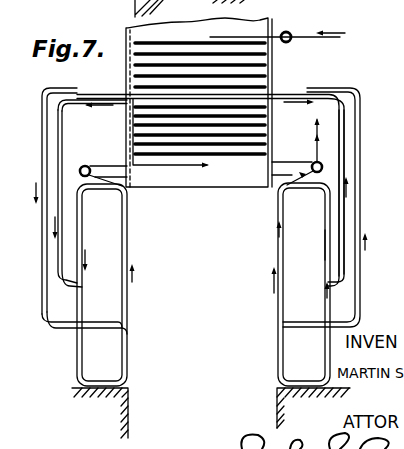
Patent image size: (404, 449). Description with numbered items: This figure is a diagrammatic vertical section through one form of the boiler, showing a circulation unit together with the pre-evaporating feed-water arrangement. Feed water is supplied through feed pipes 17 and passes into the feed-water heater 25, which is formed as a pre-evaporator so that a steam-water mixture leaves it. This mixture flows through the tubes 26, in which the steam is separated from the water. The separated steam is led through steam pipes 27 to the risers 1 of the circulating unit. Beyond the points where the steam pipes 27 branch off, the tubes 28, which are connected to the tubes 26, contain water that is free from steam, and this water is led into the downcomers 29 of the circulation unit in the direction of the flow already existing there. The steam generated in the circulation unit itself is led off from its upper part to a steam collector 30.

The risers 1 is at (128, 252).
The feed pipes 17 is at (276, 0).
The feed-water heater 25 is at (257, 67).
The tubes 26 is at (125, 99).
The steam pipes 27 is at (362, 143).
The tubes 28 is at (345, 220).
The downcomers 29 is at (327, 241).
The steam collector 30 is at (323, 167).